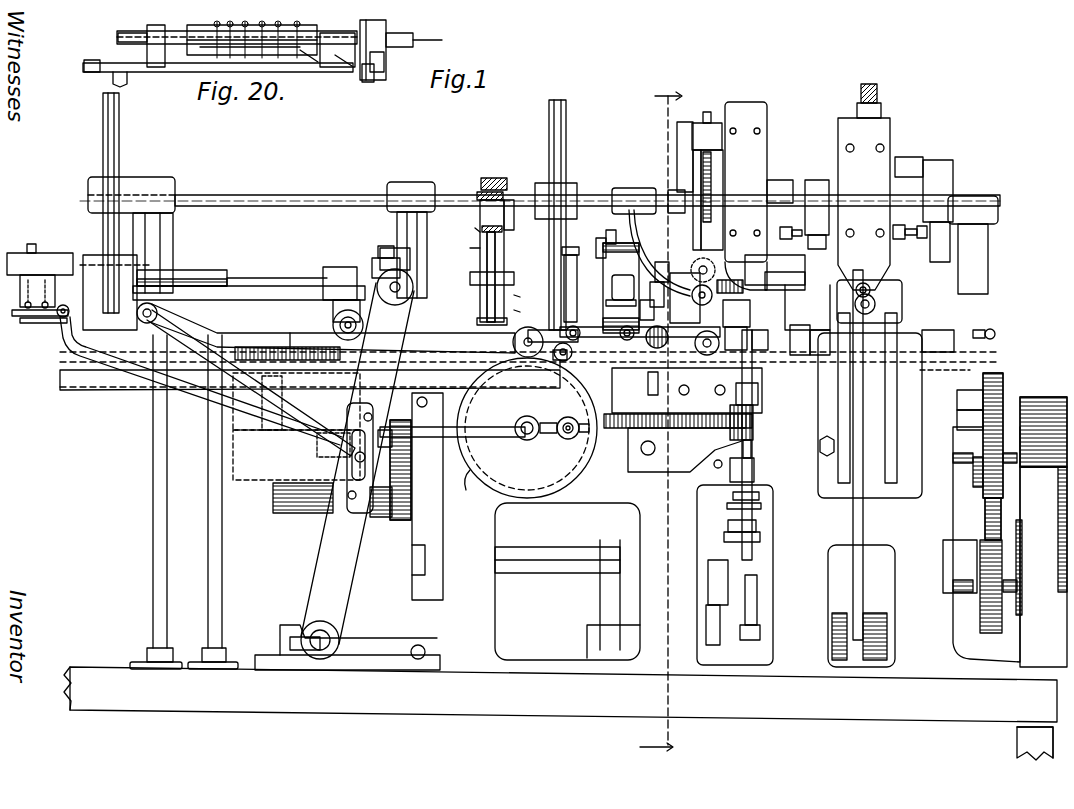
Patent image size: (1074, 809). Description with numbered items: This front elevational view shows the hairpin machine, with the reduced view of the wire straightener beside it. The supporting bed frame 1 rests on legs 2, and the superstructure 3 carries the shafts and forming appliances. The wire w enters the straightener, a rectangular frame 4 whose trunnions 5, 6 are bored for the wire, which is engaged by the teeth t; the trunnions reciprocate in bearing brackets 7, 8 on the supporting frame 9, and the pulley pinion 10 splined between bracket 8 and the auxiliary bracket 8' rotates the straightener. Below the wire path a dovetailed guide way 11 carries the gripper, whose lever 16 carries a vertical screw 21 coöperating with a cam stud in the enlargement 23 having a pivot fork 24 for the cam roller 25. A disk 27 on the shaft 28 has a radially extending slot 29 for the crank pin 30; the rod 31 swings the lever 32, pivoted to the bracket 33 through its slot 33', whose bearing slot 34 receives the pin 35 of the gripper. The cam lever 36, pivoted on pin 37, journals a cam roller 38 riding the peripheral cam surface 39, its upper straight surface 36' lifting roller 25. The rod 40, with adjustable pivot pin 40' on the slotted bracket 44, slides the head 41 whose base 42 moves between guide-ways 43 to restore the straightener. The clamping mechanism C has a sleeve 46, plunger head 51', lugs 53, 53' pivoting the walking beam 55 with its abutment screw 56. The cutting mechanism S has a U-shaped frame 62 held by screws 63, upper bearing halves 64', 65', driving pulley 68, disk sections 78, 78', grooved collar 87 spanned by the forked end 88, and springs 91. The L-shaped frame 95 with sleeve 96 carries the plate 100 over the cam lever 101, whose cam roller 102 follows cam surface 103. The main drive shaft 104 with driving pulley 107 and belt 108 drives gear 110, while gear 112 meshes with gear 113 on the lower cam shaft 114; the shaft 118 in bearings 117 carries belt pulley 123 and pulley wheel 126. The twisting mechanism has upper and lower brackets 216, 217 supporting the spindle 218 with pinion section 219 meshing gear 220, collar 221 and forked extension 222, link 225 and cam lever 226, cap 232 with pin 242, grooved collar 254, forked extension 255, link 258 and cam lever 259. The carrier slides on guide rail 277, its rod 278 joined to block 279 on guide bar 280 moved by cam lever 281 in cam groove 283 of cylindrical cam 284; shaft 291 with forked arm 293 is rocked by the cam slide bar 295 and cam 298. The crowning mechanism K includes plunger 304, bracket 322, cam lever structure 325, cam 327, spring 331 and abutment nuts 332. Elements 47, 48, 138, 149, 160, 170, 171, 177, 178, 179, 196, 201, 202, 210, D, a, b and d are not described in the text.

In FIG. 1, the supporting bed frame 1 is at (500, 694).
In FIG. 1, the legs 2 is at (1018, 740).
In FIG. 1, the superstructure 3 is at (718, 575).
In FIG. 20, the rectangular frame 4 is at (305, 32).
In FIG. 1, the rectangular frame 4 is at (12, 255).
In FIG. 20, the trunnion 5 is at (127, 35).
In FIG. 20, the trunnion 6 is at (402, 38).
In FIG. 1, the trunnion 6 is at (190, 270).
In FIG. 20, the bearing bracket 7 is at (160, 36).
In FIG. 20, the bearing bracket 8 is at (390, 61).
In FIG. 1, the bearing bracket 8 is at (201, 381).
In FIG. 20, the auxiliary bracket 8' is at (388, 73).
In FIG. 1, the auxiliary bracket 8' is at (60, 332).
In FIG. 20, the supporting frame 9 is at (185, 65).
In FIG. 1, the supporting frame 9 is at (661, 410).
In FIG. 20, the pulley pinion 10 is at (378, 43).
In FIG. 1, the pulley pinion 10 is at (120, 265).
In FIG. 1, the dovetailed guide way 11 is at (262, 295).
In FIG. 1, the lever 16 is at (378, 263).
In FIG. 1, the vertical screw 21 is at (378, 243).
In FIG. 1, the enlargement 23 is at (326, 285).
In FIG. 1, the pivot fork 24 is at (337, 319).
In FIG. 1, the cam roller 25 is at (332, 322).
In FIG. 1, the disk 27 is at (488, 470).
In FIG. 1, the shaft 28 is at (526, 442).
In FIG. 1, the radially extending slot 29 is at (576, 438).
In FIG. 1, the crank pin 30 is at (566, 416).
In FIG. 1, the rod 31 is at (490, 438).
In FIG. 1, the lever 32 is at (395, 365).
In FIG. 1, the bracket 33 is at (347, 490).
In FIG. 1, the slot 33' is at (358, 617).
In FIG. 1, the bearing slot 34 is at (407, 280).
In FIG. 1, the pin 35 is at (410, 278).
In FIG. 1, the cam lever 36 is at (326, 328).
In FIG. 1, the upper straight surface 36' is at (293, 327).
In FIG. 1, the pin 37 is at (150, 322).
In FIG. 1, the cam roller 38 is at (528, 365).
In FIG. 1, the peripheral cam surface 39 is at (459, 483).
In FIG. 1, the rod 40 is at (214, 392).
In FIG. 1, the pivot pin 40' is at (334, 451).
In FIG. 20, the head 41 is at (335, 58).
In FIG. 1, the head 41 is at (68, 320).
In FIG. 20, the base 42 is at (318, 60).
In FIG. 1, the base 42 is at (45, 322).
In FIG. 20, the guide-ways 43 is at (337, 50).
In FIG. 1, the guide-ways 43 is at (20, 318).
In FIG. 1, the slotted bracket 44 is at (318, 515).
In FIG. 1, the sleeve 46 is at (485, 277).
In FIG. 1, the bracket 47 is at (470, 280).
In FIG. 1, the collar 48 is at (524, 298).
In FIG. 1, the head 51' is at (457, 240).
In FIG. 1, the lug 53 is at (476, 188).
In FIG. 1, the lug 53' is at (523, 219).
In FIG. 1, the walking beam 55 is at (478, 228).
In FIG. 1, the adjustable abutment screw 56 is at (503, 180).
In FIG. 1, the U-shaped frame 62 is at (580, 336).
In FIG. 1, the screws 63 is at (627, 340).
In FIG. 1, the upper bearing half 64' is at (572, 275).
In FIG. 1, the upper bearing half 65' is at (615, 232).
In FIG. 1, the driving pulley 68 is at (523, 313).
In FIG. 1, the enlarged disk section 78 is at (659, 253).
In FIG. 1, the enlarged disk section 78' is at (682, 338).
In FIG. 1, the grooved collar 87 is at (621, 305).
In FIG. 1, the forked end 88 is at (598, 238).
In FIG. 1, the springs 91 is at (623, 287).
In FIG. 1, the L-shaped frame 95 is at (647, 312).
In FIG. 1, the sleeve 96 is at (660, 294).
In FIG. 1, the plate 100 is at (691, 295).
In FIG. 1, the cam lever 101 is at (640, 342).
In FIG. 1, the cam roller 102 is at (556, 362).
In FIG. 1, the cam surface 103 is at (539, 385).
In FIG. 1, the main drive shaft 104 is at (1010, 505).
In FIG. 1, the driving pulley 107 is at (1033, 564).
In FIG. 1, the belt 108 is at (1012, 628).
In FIG. 1, the gear 110 is at (410, 500).
In FIG. 1, the gear 112 is at (1003, 388).
In FIG. 1, the gear 113 is at (980, 610).
In FIG. 1, the lower cam shaft 114 is at (570, 596).
In FIG. 1, the bearings 117 is at (158, 185).
In FIG. 1, the shaft 118 is at (320, 193).
In FIG. 1, the belt pulley 123 is at (120, 122).
In FIG. 1, the pulley wheel 126 is at (567, 138).
In FIG. 1, the block 138 is at (724, 314).
In FIG. 1, the gear 149 is at (735, 282).
In FIG. 1, the block 160 is at (775, 268).
In FIG. 1, the plate 170 is at (785, 278).
In FIG. 1, the bracket 171 is at (808, 307).
In FIG. 1, the post 177 is at (796, 340).
In FIG. 1, the block 178 is at (708, 125).
In FIG. 1, the block 179 is at (665, 176).
In FIG. 1, the housing 196 is at (766, 118).
In FIG. 1, the roller 201 is at (710, 268).
In FIG. 1, the pin 202 is at (721, 268).
In FIG. 1, the post 210 is at (715, 183).
In FIG. 1, the upper bracket 216 is at (758, 394).
In FIG. 1, the lower bracket 217 is at (755, 468).
In FIG. 1, the spindle 218 is at (752, 448).
In FIG. 1, the pinion section 219 is at (754, 420).
In FIG. 1, the gear 220 is at (683, 420).
In FIG. 1, the collar 221 is at (762, 505).
In FIG. 1, the forked extension 222 is at (760, 494).
In FIG. 1, the link 225 is at (708, 598).
In FIG. 1, the cam lever 226 is at (706, 636).
In FIG. 1, the cap 232 is at (739, 332).
In FIG. 1, the pin 242 is at (760, 352).
In FIG. 1, the grooved collar 254 is at (757, 525).
In FIG. 1, the forked extension 255 is at (760, 538).
In FIG. 1, the link 258 is at (757, 600).
In FIG. 1, the cam lever 259 is at (760, 635).
In FIG. 1, the guide rail 277 is at (933, 341).
In FIG. 1, the rod 278 is at (504, 342).
In FIG. 1, the block 279 is at (258, 400).
In FIG. 1, the guide bar 280 is at (320, 410).
In FIG. 1, the cam lever 281 is at (765, 332).
In FIG. 1, the cam groove 283 is at (362, 515).
In FIG. 1, the cylindrical cam 284 is at (280, 488).
In FIG. 1, the shaft 291 is at (945, 365).
In FIG. 1, the forked arm 293 is at (960, 416).
In FIG. 1, the cam slide bar 295 is at (960, 402).
In FIG. 1, the cam 298 is at (973, 478).
In FIG. 1, the plunger 304 is at (880, 135).
In FIG. 1, the bracket 322 is at (890, 462).
In FIG. 1, the cam lever structure 325 is at (865, 526).
In FIG. 1, the cam 327 is at (830, 640).
In FIG. 1, the spring 331 is at (869, 301).
In FIG. 1, the abutment nuts 332 is at (876, 304).
In FIG. 1, the clamping mechanism C is at (445, 296).
In FIG. 1, the block D is at (685, 298).
In FIG. 1, the crowning mechanism K is at (865, 180).
In FIG. 1, the cutting mechanism S is at (621, 287).
In FIG. 1, the arm a is at (665, 264).
In FIG. 1, the post b is at (800, 262).
In FIG. 1, the block d is at (339, 283).
In FIG. 20, the teeth t is at (303, 55).
In FIG. 1, the teeth t is at (45, 238).
In FIG. 20, the wire w is at (429, 29).
In FIG. 1, the wire w is at (277, 268).